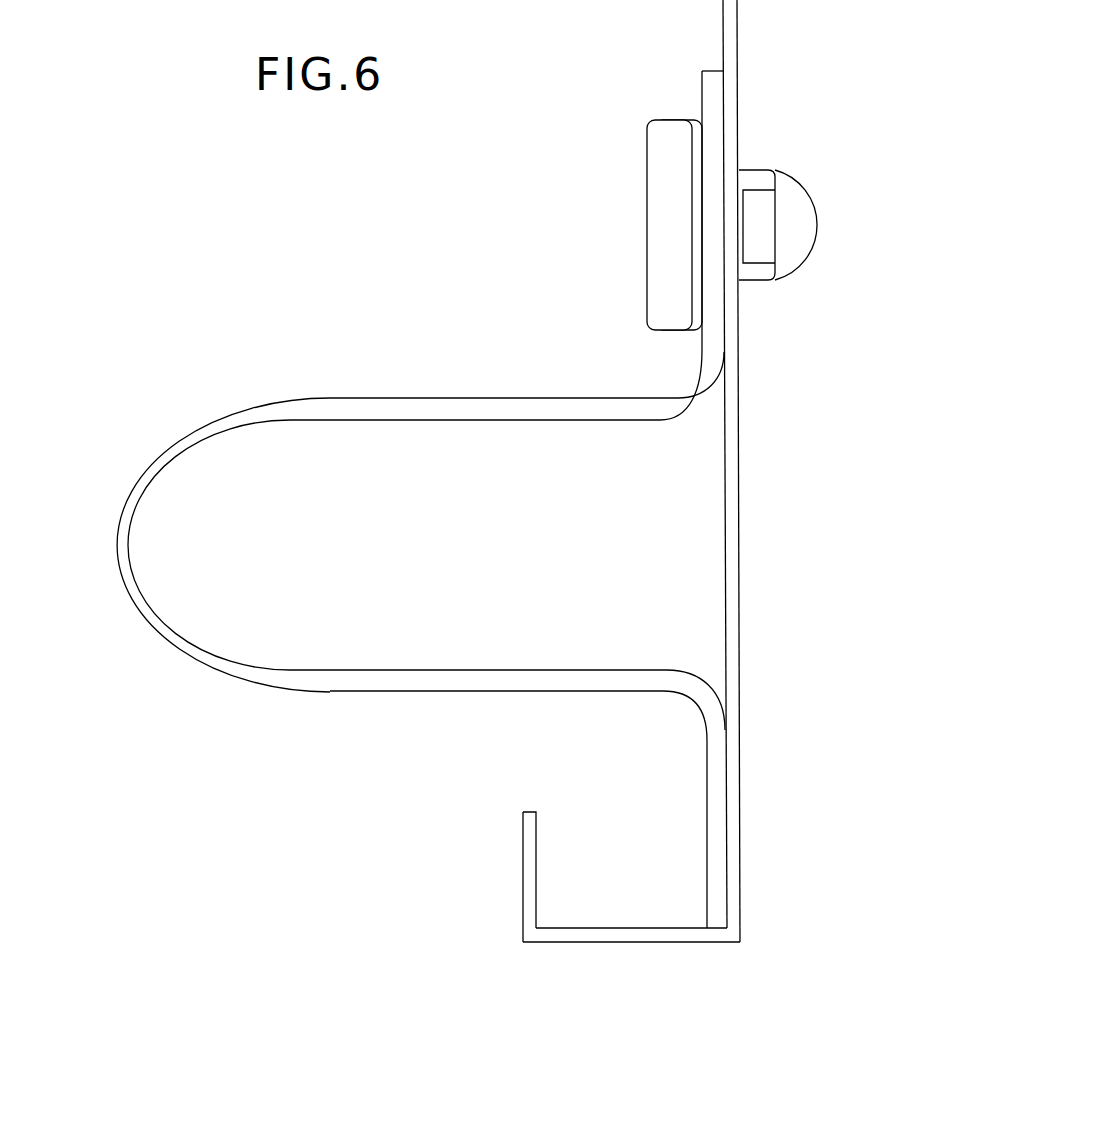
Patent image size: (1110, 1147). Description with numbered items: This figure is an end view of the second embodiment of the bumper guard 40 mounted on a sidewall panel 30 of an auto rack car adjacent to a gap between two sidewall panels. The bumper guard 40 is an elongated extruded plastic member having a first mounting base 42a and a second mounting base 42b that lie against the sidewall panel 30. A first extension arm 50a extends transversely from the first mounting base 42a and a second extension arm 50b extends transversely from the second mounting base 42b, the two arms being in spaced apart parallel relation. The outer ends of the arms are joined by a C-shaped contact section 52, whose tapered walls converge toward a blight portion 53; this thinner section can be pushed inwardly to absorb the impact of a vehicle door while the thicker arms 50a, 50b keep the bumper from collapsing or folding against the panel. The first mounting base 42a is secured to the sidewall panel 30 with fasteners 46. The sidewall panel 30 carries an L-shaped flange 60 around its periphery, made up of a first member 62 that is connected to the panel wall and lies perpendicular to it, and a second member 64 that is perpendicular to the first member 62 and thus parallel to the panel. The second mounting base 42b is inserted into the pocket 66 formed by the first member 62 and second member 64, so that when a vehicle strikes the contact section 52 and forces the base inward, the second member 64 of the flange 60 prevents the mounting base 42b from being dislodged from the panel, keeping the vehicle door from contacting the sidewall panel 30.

The sidewall panel 30 is at (733, 539).
The bumper guard 40 is at (468, 479).
The first mounting base 42a is at (712, 90).
The second mounting base 42b is at (715, 832).
The fasteners 46 is at (818, 228).
The first extension arm 50a is at (459, 413).
The second extension arm 50b is at (470, 684).
The C-shaped contact section 52 is at (177, 453).
The blight portion 53 is at (117, 542).
The L-shaped flange 60 is at (575, 847).
The first member 62 is at (613, 936).
The second member 64 is at (530, 862).
The pocket 66 is at (619, 851).